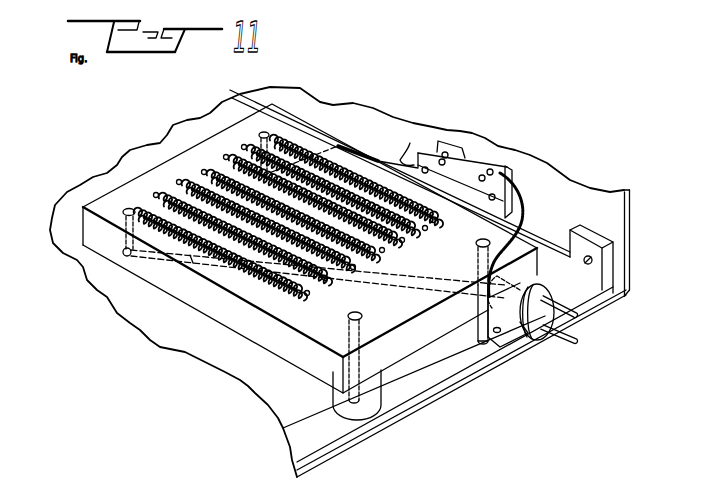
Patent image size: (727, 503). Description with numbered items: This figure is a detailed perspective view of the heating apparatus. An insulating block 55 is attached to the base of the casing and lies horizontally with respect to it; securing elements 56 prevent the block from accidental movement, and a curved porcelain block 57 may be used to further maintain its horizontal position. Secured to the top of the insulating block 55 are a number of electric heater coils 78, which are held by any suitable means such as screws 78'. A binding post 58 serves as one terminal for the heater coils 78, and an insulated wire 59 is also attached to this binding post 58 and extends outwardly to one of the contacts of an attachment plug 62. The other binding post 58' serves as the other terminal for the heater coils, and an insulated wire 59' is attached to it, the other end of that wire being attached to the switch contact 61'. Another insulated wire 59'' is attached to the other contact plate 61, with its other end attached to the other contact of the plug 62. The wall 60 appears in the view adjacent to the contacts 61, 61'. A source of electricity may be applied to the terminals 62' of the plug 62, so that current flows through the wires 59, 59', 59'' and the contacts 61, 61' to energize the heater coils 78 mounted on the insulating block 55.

The insulating block 55 is at (250, 386).
The securing elements 56 is at (481, 244).
The curved porcelain block 57 is at (362, 412).
The binding post 58 is at (89, 215).
The binding post 58' is at (228, 133).
The insulated wire 59 is at (318, 274).
The insulated wire 59' is at (341, 145).
The insulated wire 59'' is at (529, 234).
The housing wall 60 is at (500, 149).
The contact plate 61 is at (465, 162).
The switch contact 61' is at (406, 140).
The attachment plug 62 is at (527, 329).
The terminals 62' is at (585, 322).
The electric heater coils 78 is at (288, 235).
The screws 78' is at (295, 241).